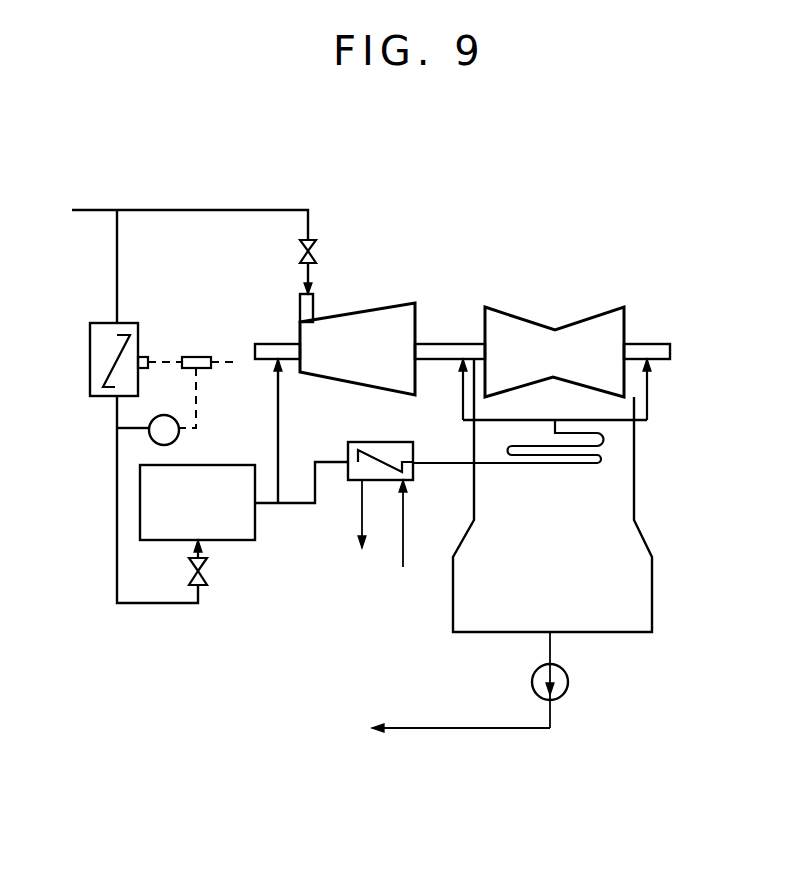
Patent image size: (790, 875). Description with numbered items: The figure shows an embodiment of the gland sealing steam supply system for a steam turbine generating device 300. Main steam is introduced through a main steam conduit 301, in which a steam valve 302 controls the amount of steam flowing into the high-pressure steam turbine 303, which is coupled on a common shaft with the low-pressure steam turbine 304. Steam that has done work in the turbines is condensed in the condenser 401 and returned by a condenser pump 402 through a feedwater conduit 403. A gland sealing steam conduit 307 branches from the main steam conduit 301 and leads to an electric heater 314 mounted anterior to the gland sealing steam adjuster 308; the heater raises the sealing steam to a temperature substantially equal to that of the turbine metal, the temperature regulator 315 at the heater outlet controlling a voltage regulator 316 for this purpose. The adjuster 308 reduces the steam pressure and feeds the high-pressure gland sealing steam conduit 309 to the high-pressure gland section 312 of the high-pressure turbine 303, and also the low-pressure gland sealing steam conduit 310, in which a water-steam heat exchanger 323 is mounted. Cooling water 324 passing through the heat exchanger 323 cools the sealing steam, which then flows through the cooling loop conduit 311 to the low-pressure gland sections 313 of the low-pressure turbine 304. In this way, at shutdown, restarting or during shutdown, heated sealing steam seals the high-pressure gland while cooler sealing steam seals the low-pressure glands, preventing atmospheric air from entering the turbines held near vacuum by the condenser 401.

The steam turbine generating device 300 is at (533, 267).
The main steam conduit 301 is at (88, 209).
The steam valve 302 is at (323, 229).
The high-pressure steam turbine 303 is at (342, 316).
The low-pressure steam turbine 304 is at (522, 319).
The gland sealing steam conduit 307 is at (117, 250).
The gland sealing steam adjuster 308 is at (255, 531).
The high-pressure gland sealing steam conduit 309 is at (278, 407).
The low-pressure gland sealing steam conduit 310 is at (647, 410).
The cooling loop conduit 311 is at (545, 464).
The high-pressure gland section 312 is at (268, 344).
The low-pressure gland sections 313 is at (446, 344).
The electric heater 314 is at (130, 323).
The temperature regulator 315 is at (163, 415).
The voltage regulator 316 is at (196, 357).
The water-steam heat exchanger 323 is at (368, 442).
The cooling water 324 is at (403, 540).
The condenser 401 is at (620, 632).
The condenser pump 402 is at (568, 690).
The feedwater conduit 403 is at (490, 728).